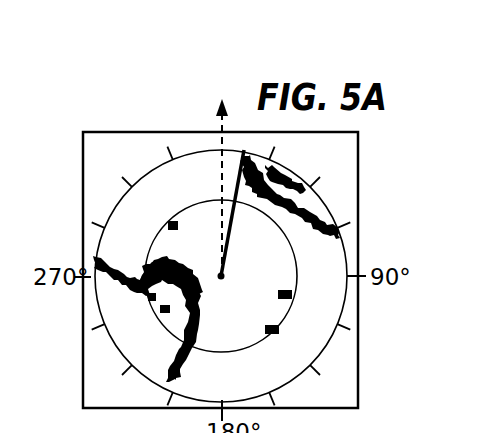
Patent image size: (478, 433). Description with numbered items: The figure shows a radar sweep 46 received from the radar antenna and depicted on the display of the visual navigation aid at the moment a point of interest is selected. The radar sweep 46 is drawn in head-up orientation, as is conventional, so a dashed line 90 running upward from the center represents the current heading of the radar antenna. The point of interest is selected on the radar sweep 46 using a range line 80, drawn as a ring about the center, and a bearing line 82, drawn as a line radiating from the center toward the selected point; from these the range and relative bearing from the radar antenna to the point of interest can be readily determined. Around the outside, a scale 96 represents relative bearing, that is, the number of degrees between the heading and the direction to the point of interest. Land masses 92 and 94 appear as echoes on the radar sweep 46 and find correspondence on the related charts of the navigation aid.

The radar sweep 46 is at (332, 347).
The range line 80 is at (298, 264).
The bearing line 82 is at (236, 243).
The dashed line 90 is at (214, 168).
The land mass 92 is at (144, 333).
The land mass 94 is at (322, 180).
The scale 96 is at (116, 207).